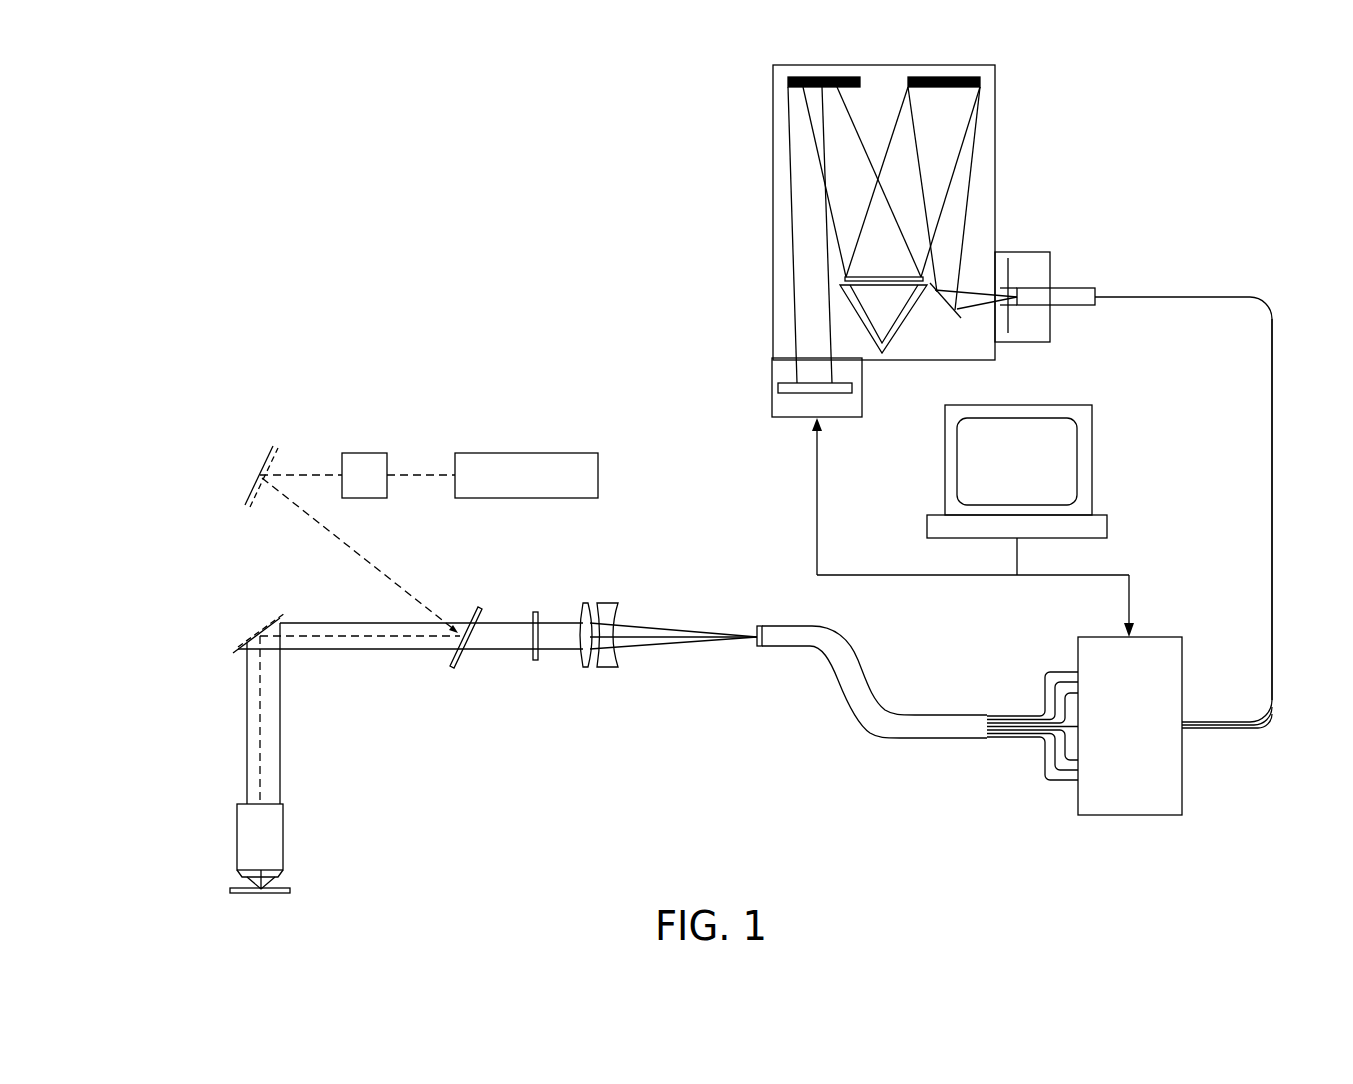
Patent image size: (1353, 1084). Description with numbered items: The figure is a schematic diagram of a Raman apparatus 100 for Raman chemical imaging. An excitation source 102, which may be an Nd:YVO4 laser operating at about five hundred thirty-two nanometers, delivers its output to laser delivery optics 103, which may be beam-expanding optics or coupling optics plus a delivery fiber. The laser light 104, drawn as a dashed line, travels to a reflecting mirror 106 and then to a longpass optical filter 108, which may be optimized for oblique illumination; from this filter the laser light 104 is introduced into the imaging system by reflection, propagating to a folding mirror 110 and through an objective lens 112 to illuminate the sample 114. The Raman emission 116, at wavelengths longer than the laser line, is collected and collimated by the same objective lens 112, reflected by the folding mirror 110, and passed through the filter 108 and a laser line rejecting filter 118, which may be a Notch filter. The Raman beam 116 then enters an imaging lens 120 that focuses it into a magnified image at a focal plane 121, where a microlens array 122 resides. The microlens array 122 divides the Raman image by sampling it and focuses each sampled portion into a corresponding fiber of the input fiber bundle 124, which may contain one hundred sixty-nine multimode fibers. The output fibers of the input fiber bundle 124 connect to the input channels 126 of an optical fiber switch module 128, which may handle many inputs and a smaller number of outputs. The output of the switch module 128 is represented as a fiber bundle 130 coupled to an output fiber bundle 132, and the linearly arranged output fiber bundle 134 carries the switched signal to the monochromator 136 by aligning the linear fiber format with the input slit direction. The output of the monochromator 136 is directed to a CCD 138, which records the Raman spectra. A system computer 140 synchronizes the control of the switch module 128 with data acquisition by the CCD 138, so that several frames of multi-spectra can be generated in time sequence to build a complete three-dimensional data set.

The Raman apparatus 100 is at (450, 237).
The excitation source 102 is at (525, 453).
The laser delivery optics 103 is at (363, 453).
The laser light 104 is at (313, 473).
The reflecting mirror 106 is at (257, 443).
The longpass optical filter 108 is at (478, 607).
The folding mirror 110 is at (255, 620).
The objective lens 112 is at (237, 837).
The sample 114 is at (230, 889).
The Raman emission 116 is at (245, 713).
The laser line rejecting filter 118 is at (535, 612).
The imaging lens 120 is at (607, 603).
The focal plane 121 is at (757, 652).
The microlens array 122 is at (760, 626).
The input fiber bundle 124 is at (855, 650).
The input channels 126 is at (1063, 668).
The optical fiber switch module 128 is at (1128, 816).
The fiber bundle 130 is at (1213, 717).
The output fiber bundle 132 is at (1270, 547).
The output fiber bundle 134 is at (1072, 288).
The monochromator 136 is at (772, 218).
The CCD 138 is at (772, 372).
The system computer 140 is at (945, 460).